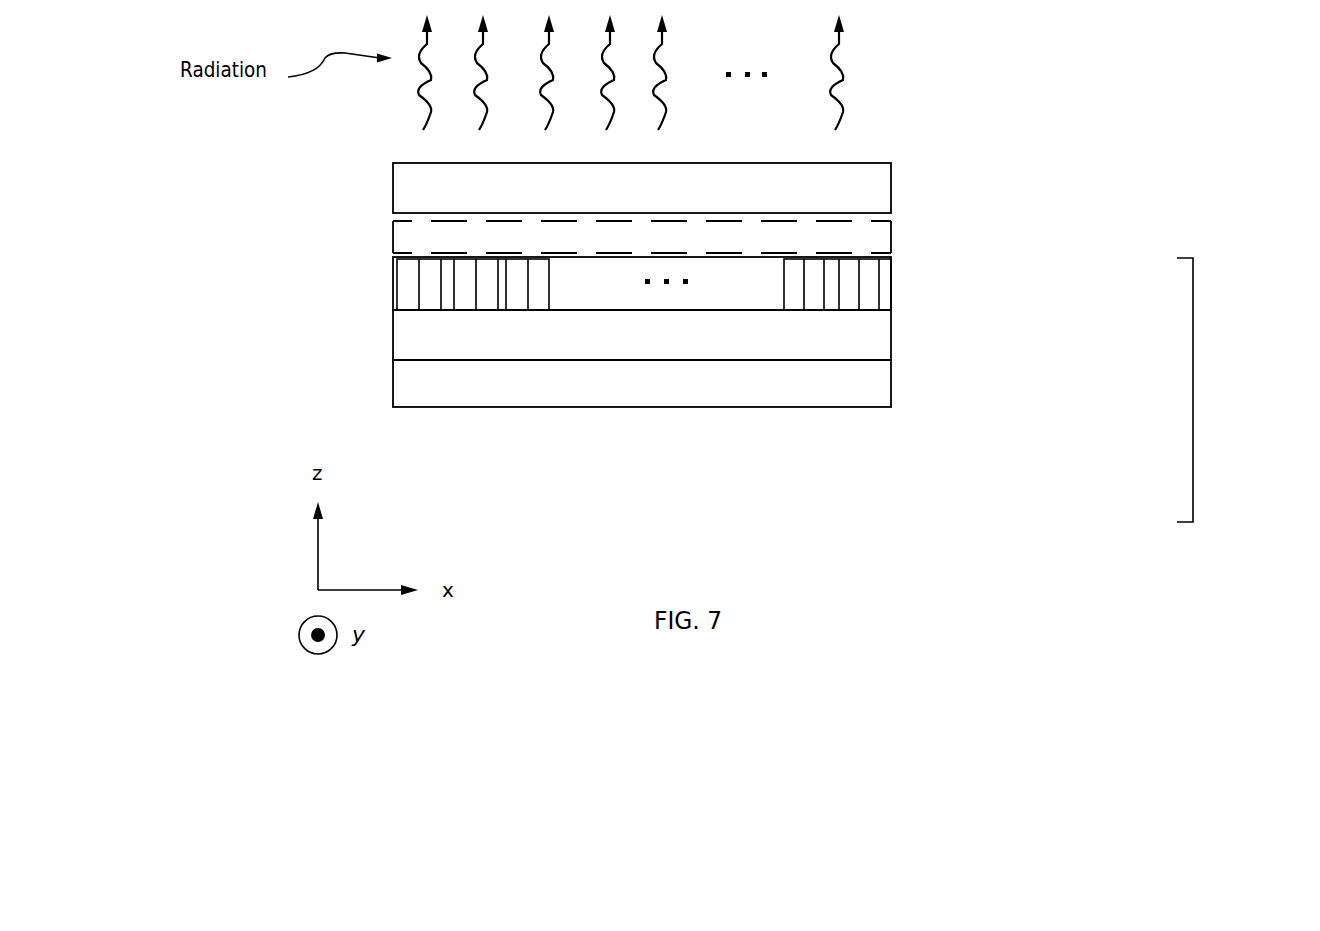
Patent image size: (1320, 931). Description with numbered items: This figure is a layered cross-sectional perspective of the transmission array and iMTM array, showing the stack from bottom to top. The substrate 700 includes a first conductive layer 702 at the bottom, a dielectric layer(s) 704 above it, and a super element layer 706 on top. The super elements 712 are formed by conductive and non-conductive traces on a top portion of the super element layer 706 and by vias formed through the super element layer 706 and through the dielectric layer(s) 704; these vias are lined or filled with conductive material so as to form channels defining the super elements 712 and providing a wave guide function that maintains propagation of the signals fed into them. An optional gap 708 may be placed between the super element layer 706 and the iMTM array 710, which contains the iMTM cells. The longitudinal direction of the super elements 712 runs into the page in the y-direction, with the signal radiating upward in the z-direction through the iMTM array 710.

The substrate 700 is at (1232, 390).
The first conductive layer 702 is at (907, 387).
The dielectric layer(s) 704 is at (907, 340).
The super element layer 706 is at (907, 285).
The optional gap 708 is at (907, 234).
The iMTM array 710 is at (907, 184).
The super elements 712 is at (380, 284).